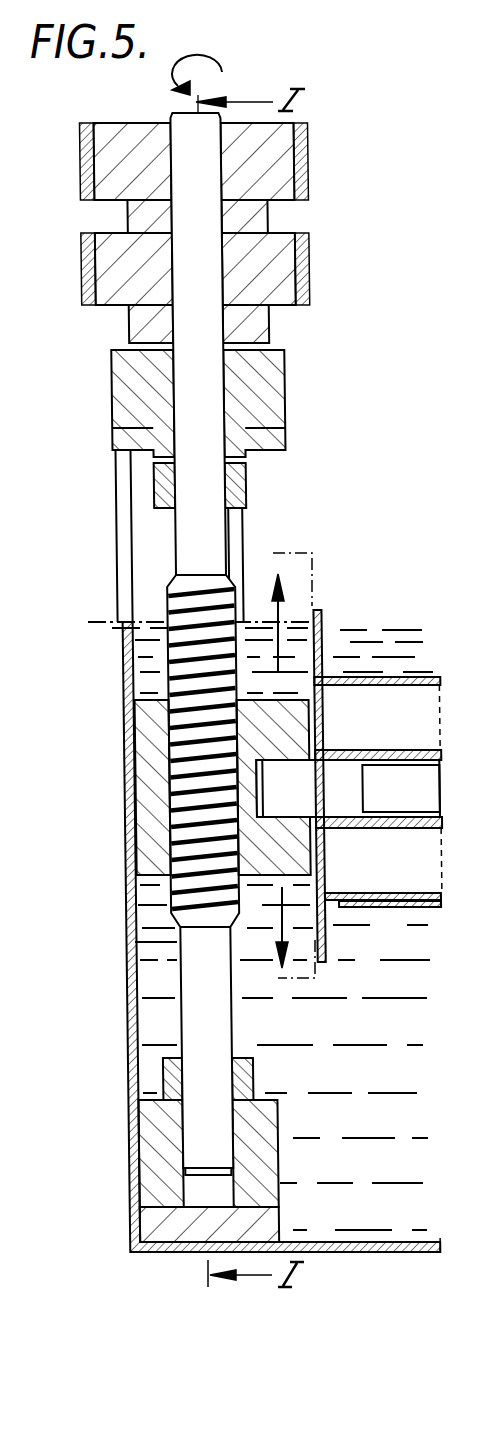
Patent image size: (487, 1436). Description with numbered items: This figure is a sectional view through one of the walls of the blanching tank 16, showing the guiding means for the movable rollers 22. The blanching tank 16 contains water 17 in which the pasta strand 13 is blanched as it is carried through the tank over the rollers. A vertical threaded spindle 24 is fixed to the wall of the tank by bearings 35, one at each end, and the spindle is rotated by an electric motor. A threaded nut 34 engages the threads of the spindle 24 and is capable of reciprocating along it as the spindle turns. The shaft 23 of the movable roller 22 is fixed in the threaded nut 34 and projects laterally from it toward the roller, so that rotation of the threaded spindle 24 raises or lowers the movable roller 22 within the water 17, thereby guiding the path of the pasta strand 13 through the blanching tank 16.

The pasta strand 13 is at (397, 908).
The blanching tank 16 is at (132, 965).
The water 17 is at (378, 1085).
The movable roller 22 is at (350, 677).
The shaft 23 is at (313, 782).
The threaded spindle 24 is at (176, 653).
The threaded nut 34 is at (147, 780).
The bearing 35 is at (278, 385).